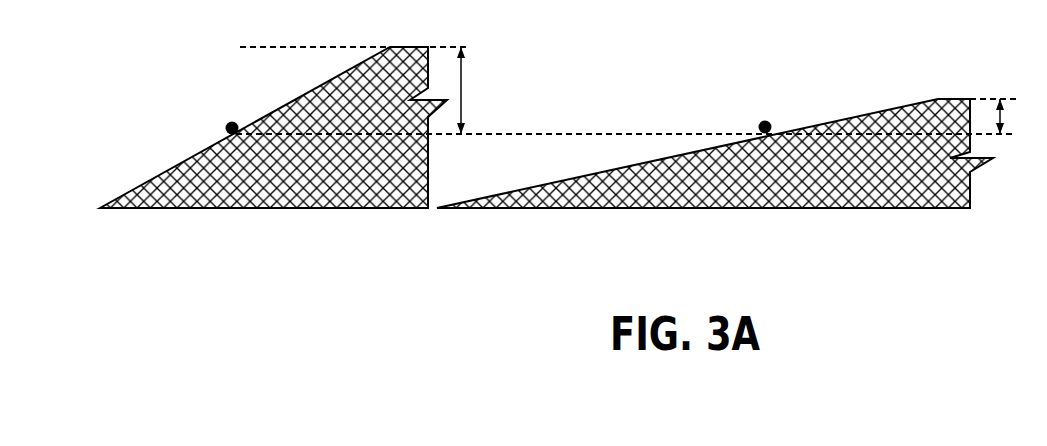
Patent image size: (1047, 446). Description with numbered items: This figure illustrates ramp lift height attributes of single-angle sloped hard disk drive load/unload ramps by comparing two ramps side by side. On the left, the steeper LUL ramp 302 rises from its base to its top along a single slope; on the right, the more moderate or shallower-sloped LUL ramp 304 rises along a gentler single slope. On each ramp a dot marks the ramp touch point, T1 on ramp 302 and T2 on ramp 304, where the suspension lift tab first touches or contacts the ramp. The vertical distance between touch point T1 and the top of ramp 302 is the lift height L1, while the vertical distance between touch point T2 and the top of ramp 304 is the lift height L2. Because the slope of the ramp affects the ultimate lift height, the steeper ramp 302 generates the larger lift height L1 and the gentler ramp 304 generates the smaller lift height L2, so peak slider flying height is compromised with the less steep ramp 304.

The LUL ramp 302 is at (170, 177).
The LUL ramp 304 is at (952, 192).
The ramp touch point T1 is at (230, 121).
The ramp touch point T2 is at (766, 120).
The lift height L1 is at (462, 77).
The lift height L2 is at (1002, 117).